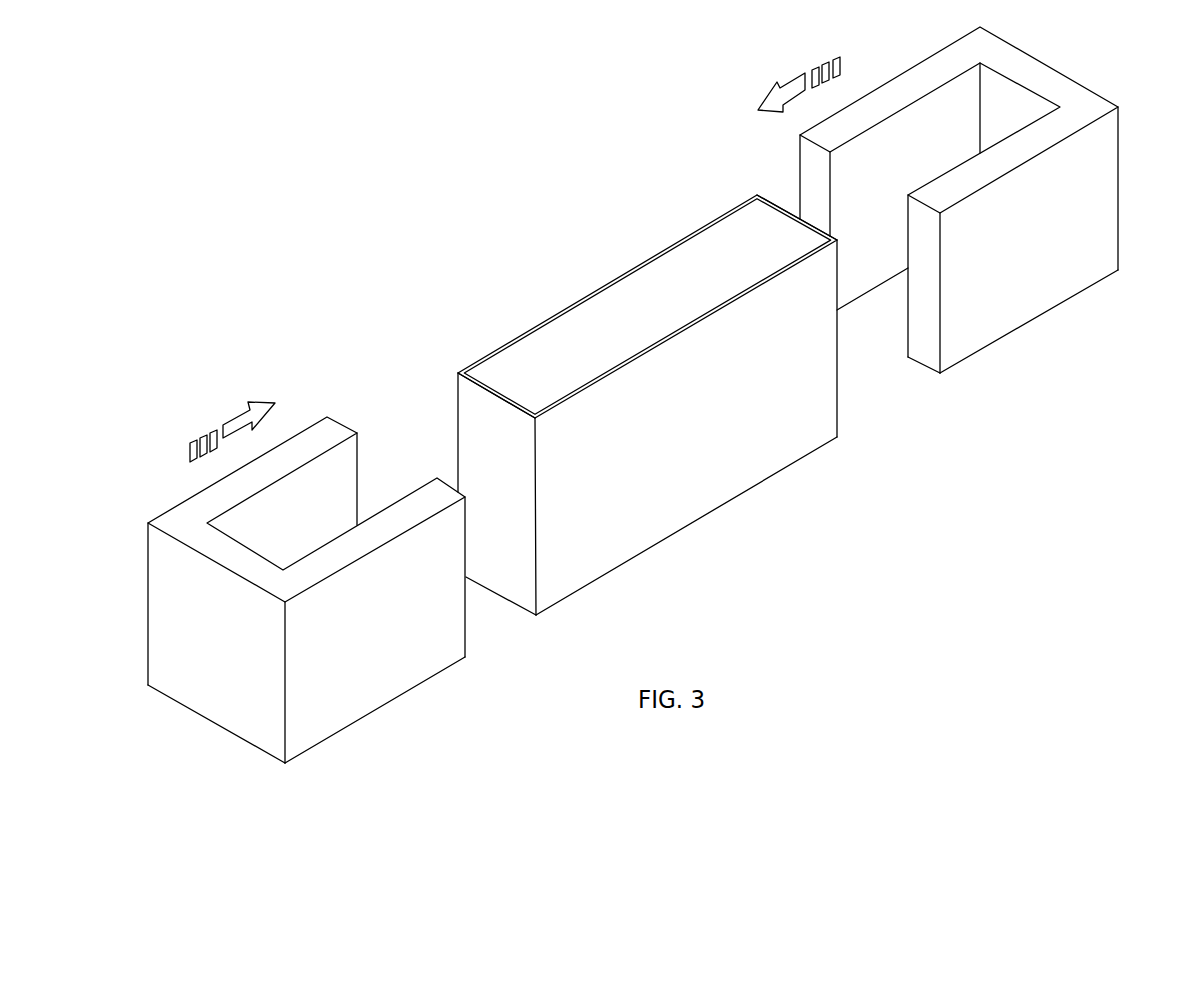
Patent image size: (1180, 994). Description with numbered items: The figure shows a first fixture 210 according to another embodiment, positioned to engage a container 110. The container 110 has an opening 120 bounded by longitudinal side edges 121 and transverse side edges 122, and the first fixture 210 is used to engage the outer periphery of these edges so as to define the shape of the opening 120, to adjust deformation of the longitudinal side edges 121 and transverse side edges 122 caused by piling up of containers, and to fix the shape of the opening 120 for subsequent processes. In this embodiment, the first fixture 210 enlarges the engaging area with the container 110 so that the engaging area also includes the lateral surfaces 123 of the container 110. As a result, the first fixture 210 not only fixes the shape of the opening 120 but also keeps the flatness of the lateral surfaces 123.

The container 110 is at (655, 395).
The opening 120 is at (622, 395).
The longitudinal side edges 121 is at (597, 288).
The transverse side edges 122 is at (493, 396).
The lateral surfaces 123 is at (713, 452).
The first fixture 210 is at (397, 655).